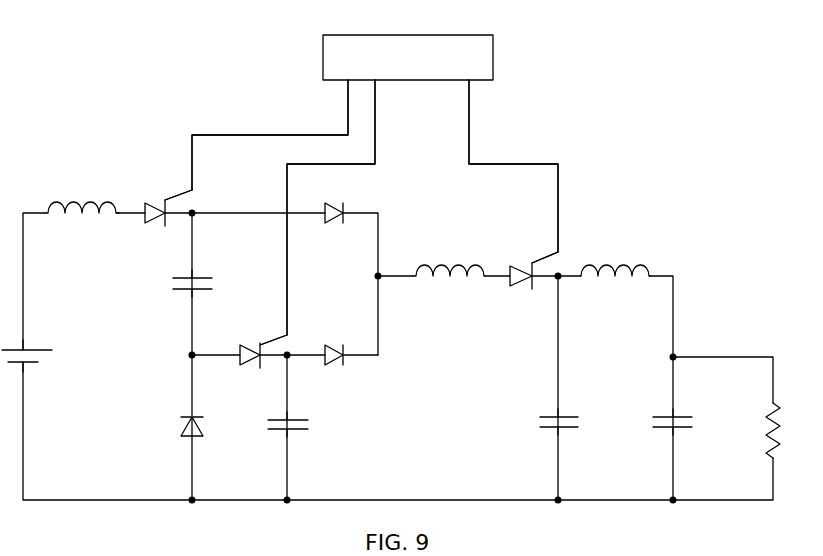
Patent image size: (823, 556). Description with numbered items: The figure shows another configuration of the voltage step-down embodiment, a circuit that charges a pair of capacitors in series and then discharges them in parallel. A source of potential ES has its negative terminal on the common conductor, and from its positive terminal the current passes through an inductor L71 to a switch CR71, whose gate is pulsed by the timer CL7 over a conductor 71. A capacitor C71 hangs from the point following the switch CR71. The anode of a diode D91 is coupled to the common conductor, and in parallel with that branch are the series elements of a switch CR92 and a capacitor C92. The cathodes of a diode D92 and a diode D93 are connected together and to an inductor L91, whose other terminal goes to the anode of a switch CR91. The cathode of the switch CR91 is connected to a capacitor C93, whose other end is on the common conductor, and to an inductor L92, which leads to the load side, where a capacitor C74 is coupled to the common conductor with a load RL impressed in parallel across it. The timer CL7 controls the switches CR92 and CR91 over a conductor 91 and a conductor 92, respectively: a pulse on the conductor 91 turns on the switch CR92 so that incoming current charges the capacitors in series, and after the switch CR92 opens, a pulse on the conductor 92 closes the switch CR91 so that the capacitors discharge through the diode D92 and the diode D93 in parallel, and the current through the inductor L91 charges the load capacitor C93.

The timer CL7 is at (493, 55).
The conductor 71 is at (193, 170).
The conductor 91 is at (375, 137).
The conductor 92 is at (469, 137).
The inductor L71 is at (65, 203).
The switch CR71 is at (151, 225).
The capacitor C71 is at (183, 292).
The source of potential ES is at (43, 355).
The diode D91 is at (180, 432).
The switch CR92 is at (251, 366).
The capacitor C92 is at (299, 432).
The diode D92 is at (337, 221).
The diode D93 is at (337, 370).
The inductor L91 is at (422, 266).
The switch CR91 is at (523, 287).
The inductor L92 is at (600, 266).
The capacitor C93 is at (548, 432).
The capacitor C74 is at (663, 432).
The load RL is at (762, 436).